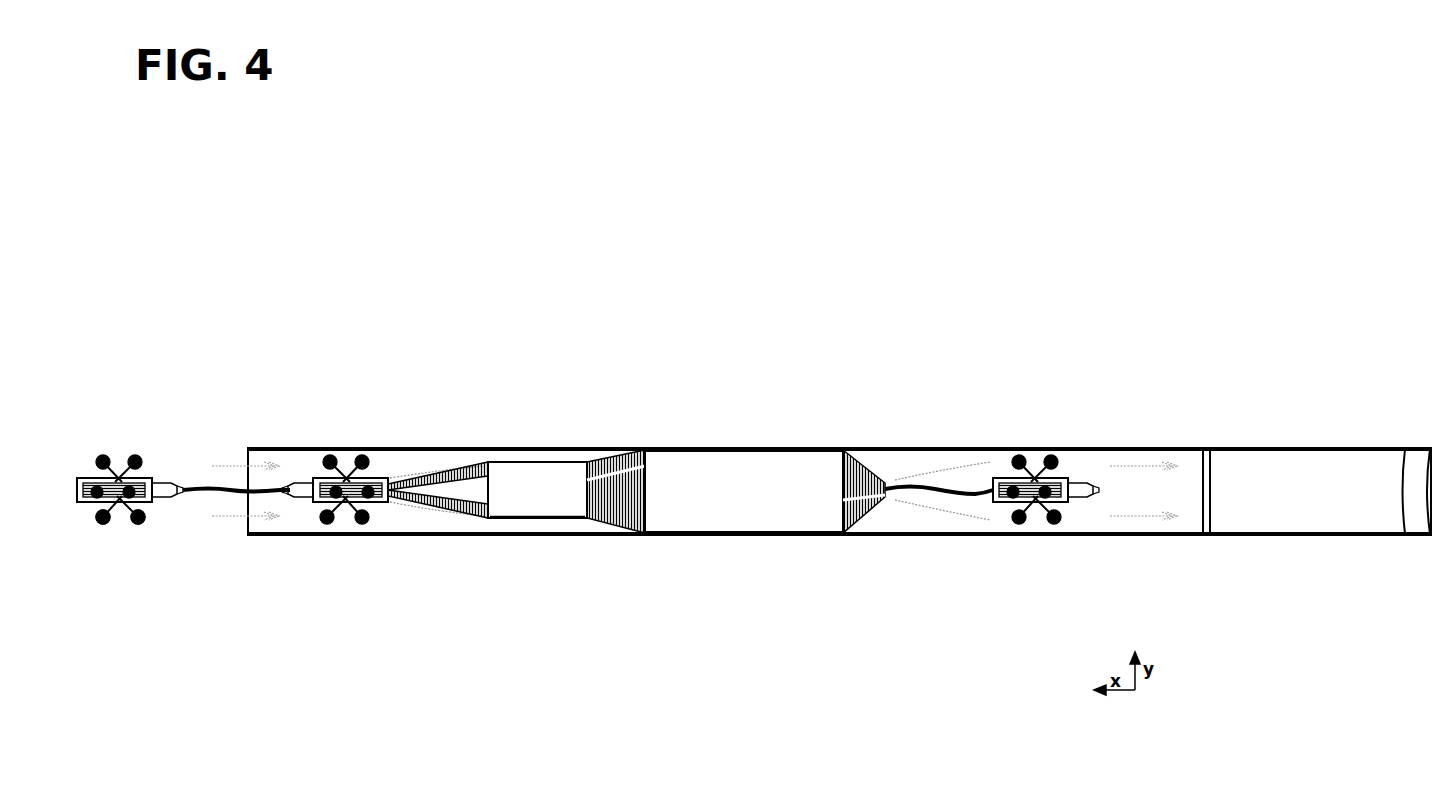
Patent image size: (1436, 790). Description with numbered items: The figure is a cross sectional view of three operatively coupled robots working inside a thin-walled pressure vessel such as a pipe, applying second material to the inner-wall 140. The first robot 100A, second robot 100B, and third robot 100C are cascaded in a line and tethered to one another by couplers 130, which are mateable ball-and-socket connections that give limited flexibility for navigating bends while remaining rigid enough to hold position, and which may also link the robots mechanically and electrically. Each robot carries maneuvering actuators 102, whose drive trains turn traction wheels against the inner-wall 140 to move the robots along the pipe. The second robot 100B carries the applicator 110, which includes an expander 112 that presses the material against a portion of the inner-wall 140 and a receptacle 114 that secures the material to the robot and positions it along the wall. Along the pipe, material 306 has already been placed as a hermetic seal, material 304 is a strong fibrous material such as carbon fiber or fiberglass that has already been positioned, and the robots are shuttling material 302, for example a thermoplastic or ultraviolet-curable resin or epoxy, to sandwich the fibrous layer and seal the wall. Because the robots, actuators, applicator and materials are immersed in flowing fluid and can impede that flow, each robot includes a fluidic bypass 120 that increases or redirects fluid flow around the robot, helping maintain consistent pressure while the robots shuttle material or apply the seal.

The first robot 100A is at (126, 486).
The second robot 100B is at (355, 440).
The third robot 100C is at (1036, 438).
The maneuvering actuators 102 is at (122, 530).
The applicator 110 is at (475, 514).
The expander 112 is at (868, 517).
The receptacle 114 is at (528, 516).
The fluidic bypass 120 is at (392, 502).
The couplers 130 is at (222, 486).
The inner-wall 140 is at (268, 537).
The material 302 is at (583, 468).
The material 304 is at (772, 453).
The material 306 is at (1322, 453).